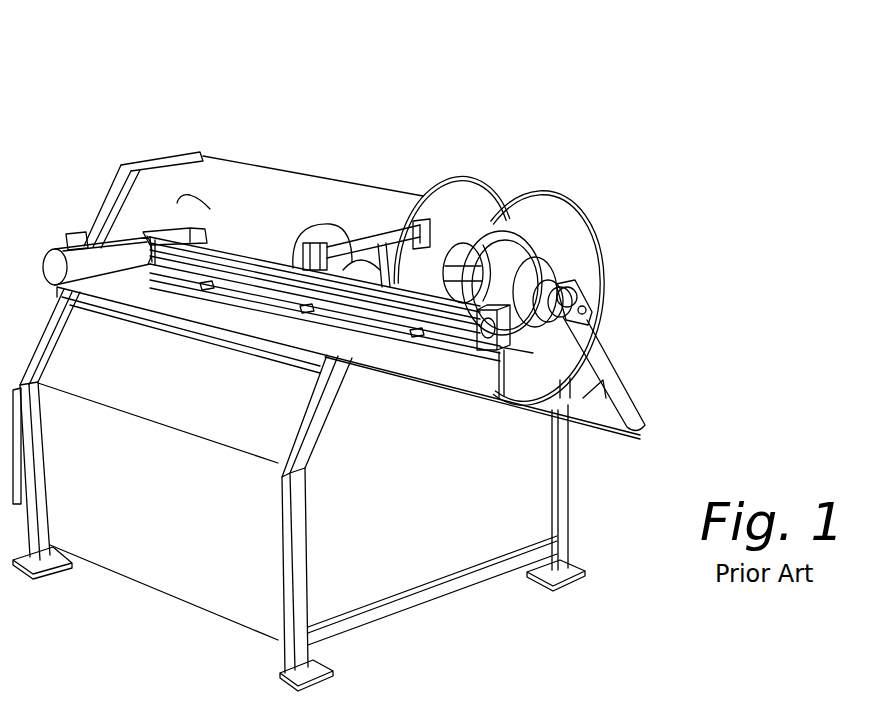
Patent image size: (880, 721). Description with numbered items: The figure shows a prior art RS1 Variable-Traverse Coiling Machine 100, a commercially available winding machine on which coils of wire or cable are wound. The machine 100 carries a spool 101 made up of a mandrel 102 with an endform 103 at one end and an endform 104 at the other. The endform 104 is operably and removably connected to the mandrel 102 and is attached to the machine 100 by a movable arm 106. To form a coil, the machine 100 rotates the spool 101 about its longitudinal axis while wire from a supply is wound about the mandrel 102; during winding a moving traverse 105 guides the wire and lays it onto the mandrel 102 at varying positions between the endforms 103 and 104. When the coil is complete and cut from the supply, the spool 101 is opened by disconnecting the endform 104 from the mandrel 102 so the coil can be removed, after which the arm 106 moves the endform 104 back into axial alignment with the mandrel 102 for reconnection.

The variable-traverse coiling machine 100 is at (383, 353).
The spool 101 is at (574, 242).
The mandrel 102 is at (473, 230).
The endform 103 is at (462, 180).
The endform 104 is at (598, 224).
The traverse 105 is at (347, 230).
The movable arm 106 is at (620, 398).